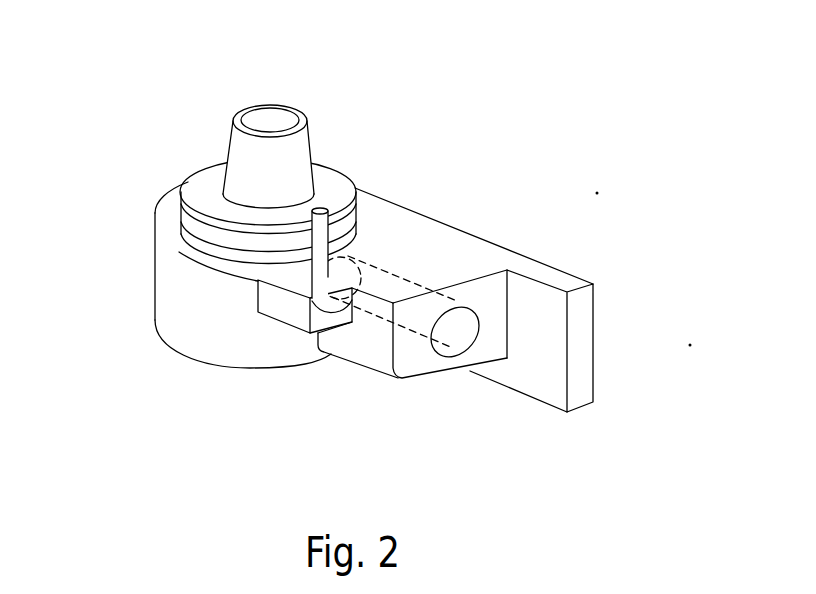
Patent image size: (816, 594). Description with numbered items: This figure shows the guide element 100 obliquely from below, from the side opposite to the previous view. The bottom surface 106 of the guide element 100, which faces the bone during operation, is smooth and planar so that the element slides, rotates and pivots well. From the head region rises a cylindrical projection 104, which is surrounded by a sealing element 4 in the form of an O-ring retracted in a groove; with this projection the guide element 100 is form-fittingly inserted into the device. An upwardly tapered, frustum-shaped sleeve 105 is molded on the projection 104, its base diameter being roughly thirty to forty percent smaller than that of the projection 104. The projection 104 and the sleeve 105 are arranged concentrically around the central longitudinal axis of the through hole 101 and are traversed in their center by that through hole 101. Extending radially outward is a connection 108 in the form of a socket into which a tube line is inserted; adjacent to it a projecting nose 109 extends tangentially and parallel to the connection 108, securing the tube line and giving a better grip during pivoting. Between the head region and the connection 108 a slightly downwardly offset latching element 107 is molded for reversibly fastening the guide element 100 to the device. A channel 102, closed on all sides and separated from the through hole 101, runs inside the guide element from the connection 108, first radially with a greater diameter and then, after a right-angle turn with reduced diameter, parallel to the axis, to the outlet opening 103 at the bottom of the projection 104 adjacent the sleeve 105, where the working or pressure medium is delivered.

The guide element 100 is at (157, 373).
The through hole 101 is at (264, 120).
The channel 102 is at (395, 280).
The outlet opening 103 is at (327, 208).
The cylindrical projection 104 is at (183, 223).
The frustrum-shaped sleeve 105 is at (243, 170).
The bottom surface 106 is at (173, 240).
The latching element 107 is at (287, 338).
The connection 108 is at (452, 335).
The nose 109 is at (557, 281).
The sealing element 4 is at (220, 240).